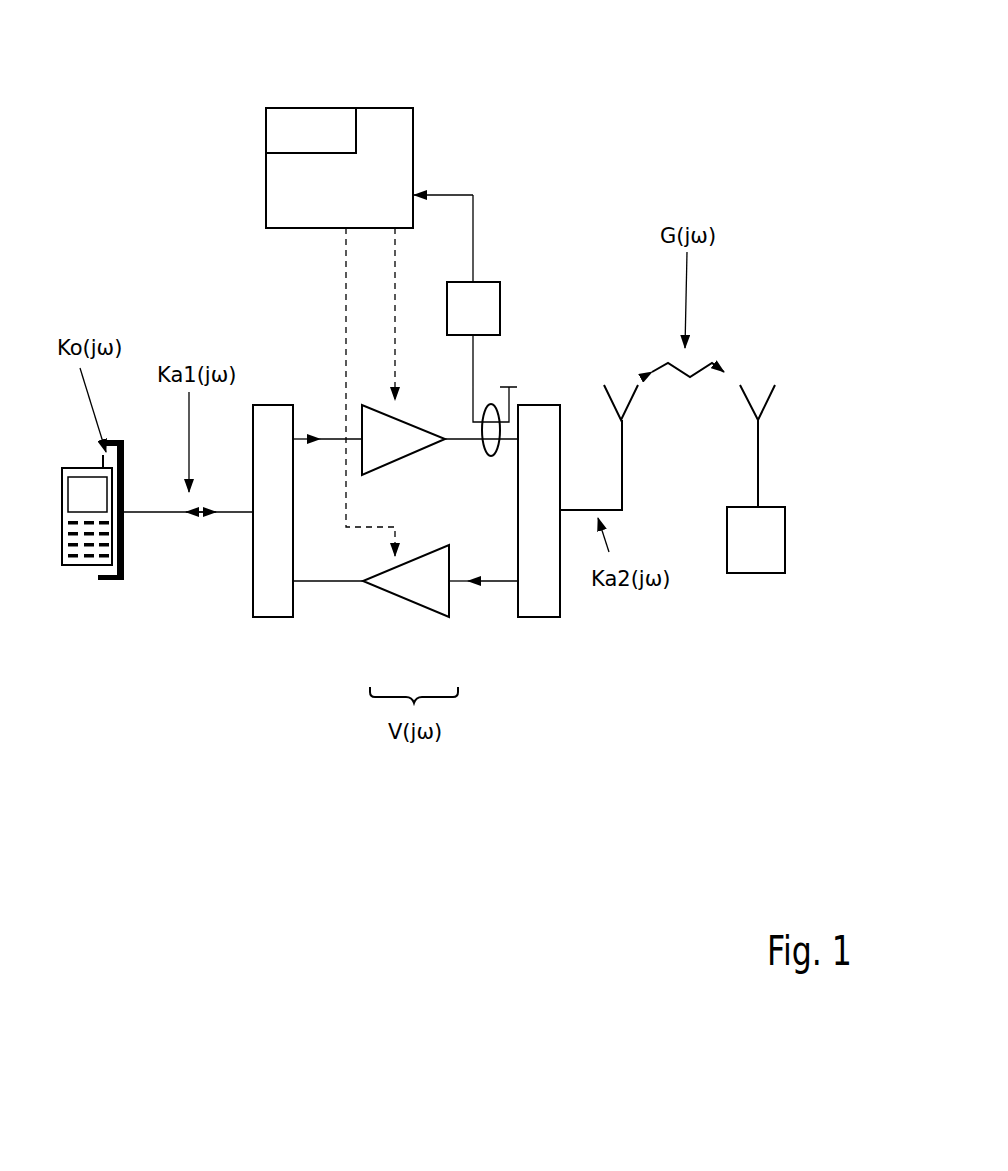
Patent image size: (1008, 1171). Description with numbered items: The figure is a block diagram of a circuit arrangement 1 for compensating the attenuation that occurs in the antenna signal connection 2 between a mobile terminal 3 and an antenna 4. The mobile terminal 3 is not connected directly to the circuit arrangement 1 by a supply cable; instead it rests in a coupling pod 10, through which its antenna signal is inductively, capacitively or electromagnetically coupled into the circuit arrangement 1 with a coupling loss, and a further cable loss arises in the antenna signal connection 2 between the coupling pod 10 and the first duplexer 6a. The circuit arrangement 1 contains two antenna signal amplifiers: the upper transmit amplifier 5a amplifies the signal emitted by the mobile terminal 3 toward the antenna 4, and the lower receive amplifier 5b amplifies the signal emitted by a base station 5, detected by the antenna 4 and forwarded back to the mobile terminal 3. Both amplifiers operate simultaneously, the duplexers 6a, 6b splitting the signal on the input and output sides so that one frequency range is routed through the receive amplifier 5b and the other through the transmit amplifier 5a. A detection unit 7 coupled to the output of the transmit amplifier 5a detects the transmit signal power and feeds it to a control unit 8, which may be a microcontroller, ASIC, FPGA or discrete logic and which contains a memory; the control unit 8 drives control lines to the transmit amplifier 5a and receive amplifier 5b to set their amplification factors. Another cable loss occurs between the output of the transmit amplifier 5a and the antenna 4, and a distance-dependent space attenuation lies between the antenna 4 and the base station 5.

The circuit arrangement 1 is at (157, 126).
The antenna signal connection 2 is at (202, 517).
The mobile terminal 3 is at (75, 570).
The antenna 4 is at (617, 377).
The base station 5 is at (756, 479).
The transmit amplifier 5a is at (405, 440).
The receive amplifier 5b is at (405, 581).
The duplexer 6a is at (273, 511).
The duplexer 6b is at (539, 511).
The detection unit 7 is at (482, 369).
The control unit 8 is at (369, 332).
The coupling pod 10 is at (126, 583).